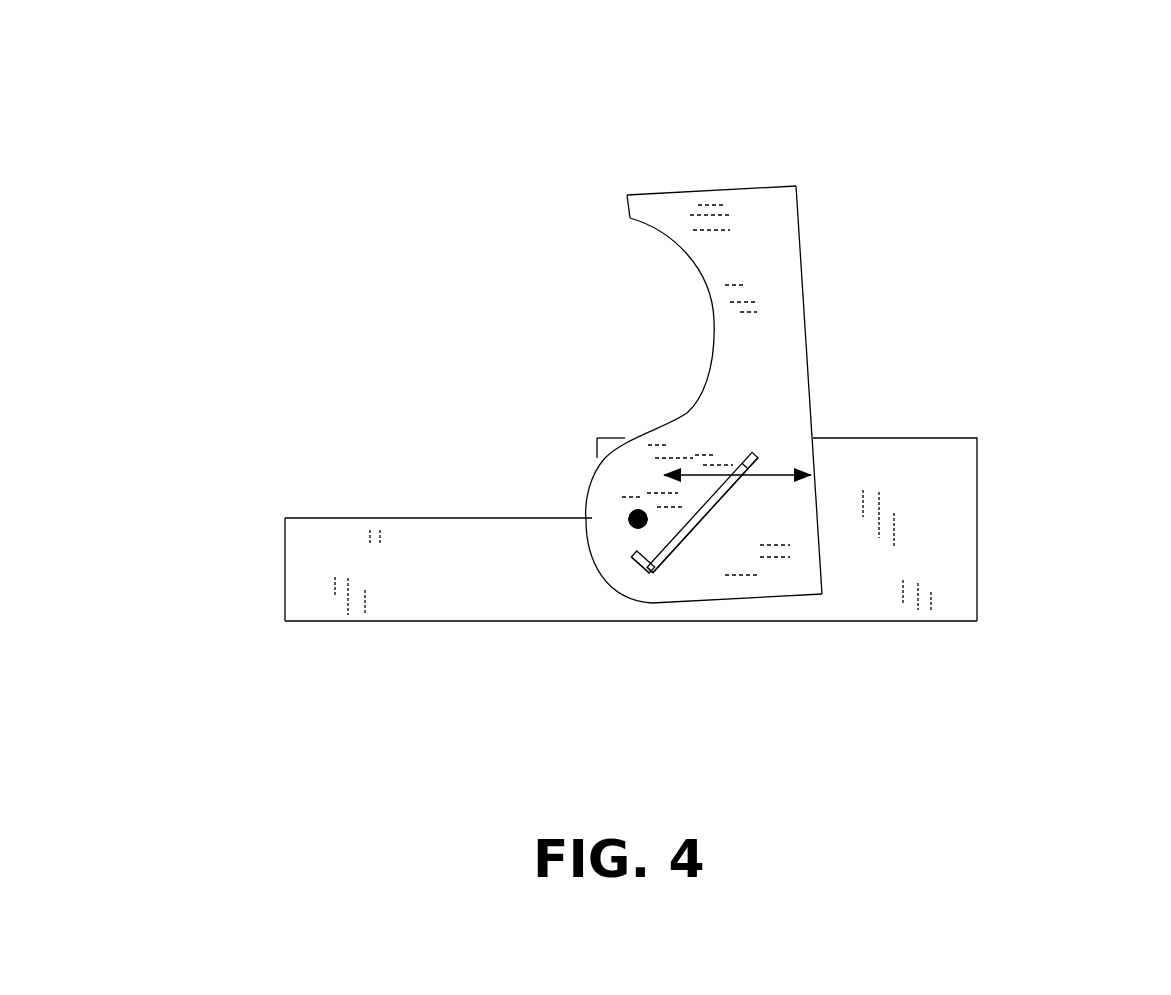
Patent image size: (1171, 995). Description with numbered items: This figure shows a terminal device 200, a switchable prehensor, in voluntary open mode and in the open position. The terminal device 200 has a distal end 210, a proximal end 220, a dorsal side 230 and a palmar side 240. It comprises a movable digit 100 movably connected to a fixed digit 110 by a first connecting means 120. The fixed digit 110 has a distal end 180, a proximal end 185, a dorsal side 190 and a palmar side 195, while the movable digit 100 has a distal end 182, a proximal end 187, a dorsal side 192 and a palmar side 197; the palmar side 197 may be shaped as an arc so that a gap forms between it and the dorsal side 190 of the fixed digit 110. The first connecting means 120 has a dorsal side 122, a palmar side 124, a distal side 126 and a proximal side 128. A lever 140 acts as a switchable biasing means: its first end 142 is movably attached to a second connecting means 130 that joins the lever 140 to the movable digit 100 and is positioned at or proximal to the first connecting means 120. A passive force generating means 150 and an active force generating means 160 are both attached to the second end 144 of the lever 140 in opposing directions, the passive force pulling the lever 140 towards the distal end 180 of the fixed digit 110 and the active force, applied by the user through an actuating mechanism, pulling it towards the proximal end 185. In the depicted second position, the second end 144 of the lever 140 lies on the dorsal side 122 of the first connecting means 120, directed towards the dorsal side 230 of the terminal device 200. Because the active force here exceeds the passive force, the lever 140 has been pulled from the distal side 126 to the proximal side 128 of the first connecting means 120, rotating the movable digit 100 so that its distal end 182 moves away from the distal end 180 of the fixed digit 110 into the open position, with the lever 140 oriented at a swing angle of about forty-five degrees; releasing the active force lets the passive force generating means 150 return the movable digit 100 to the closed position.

The movable digit 100 is at (708, 413).
The fixed digit 110 is at (283, 560).
The first connecting means 120 is at (663, 559).
The dorsal side of first connecting means 122 is at (637, 500).
The palmar side of first connecting means 124 is at (637, 539).
The distal side of first connecting means 126 is at (608, 518).
The proximal side of first connecting means 128 is at (657, 517).
The second connecting means 130 is at (643, 568).
The lever 140 is at (717, 500).
The first end of lever 142 is at (667, 567).
The second end of lever 144 is at (770, 569).
The passive force generating means 150 is at (697, 472).
The active force generating means 160 is at (780, 477).
The distal end of fixed digit 180 is at (579, 569).
The distal end of movable digit 182 is at (712, 181).
The proximal end of fixed digit 185 is at (982, 533).
The proximal end of movable digit 187 is at (725, 605).
The dorsal side of fixed digit 190 is at (472, 509).
The dorsal side of movable digit 192 is at (807, 328).
The palmar side of fixed digit 195 is at (500, 624).
The palmar side of movable digit 197 is at (631, 318).
The terminal device 200 is at (326, 153).
The distal end of terminal device 210 is at (188, 428).
The proximal end of terminal device 220 is at (1050, 450).
The dorsal side of terminal device 230 is at (583, 156).
The palmar side of terminal device 240 is at (558, 717).